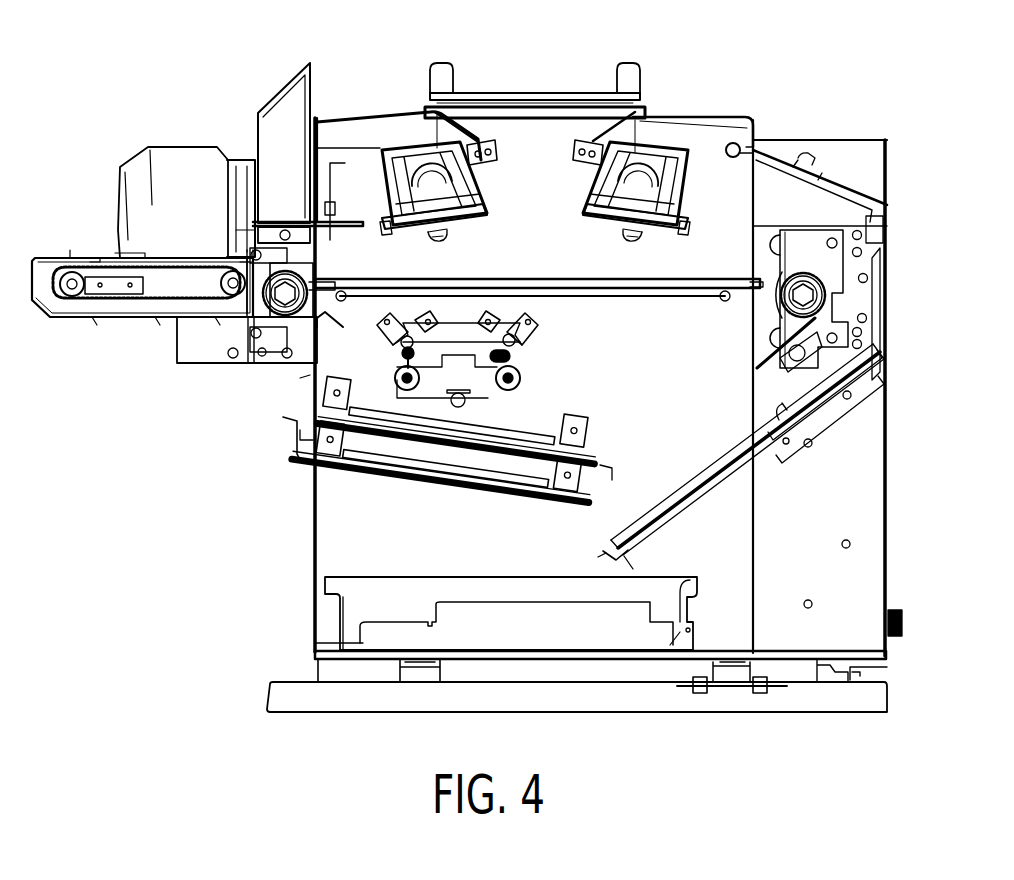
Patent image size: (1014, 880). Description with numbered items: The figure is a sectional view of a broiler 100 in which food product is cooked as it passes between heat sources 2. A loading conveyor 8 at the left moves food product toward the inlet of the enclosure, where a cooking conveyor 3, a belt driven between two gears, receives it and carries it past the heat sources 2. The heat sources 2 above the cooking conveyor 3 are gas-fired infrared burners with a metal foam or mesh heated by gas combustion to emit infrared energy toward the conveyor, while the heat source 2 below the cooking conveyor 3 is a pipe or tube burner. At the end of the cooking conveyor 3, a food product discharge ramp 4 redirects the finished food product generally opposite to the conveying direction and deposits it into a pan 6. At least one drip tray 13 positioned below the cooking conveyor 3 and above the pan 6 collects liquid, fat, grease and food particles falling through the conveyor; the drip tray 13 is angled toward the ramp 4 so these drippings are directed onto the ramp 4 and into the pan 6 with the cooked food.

The broiler 100 is at (770, 64).
The heat source 2 is at (392, 187).
The cooking conveyor 3 is at (628, 302).
The food product discharge ramp 4 is at (668, 517).
The pan 6 is at (688, 614).
The loading conveyor 8 is at (120, 300).
The drip tray 13 is at (601, 448).